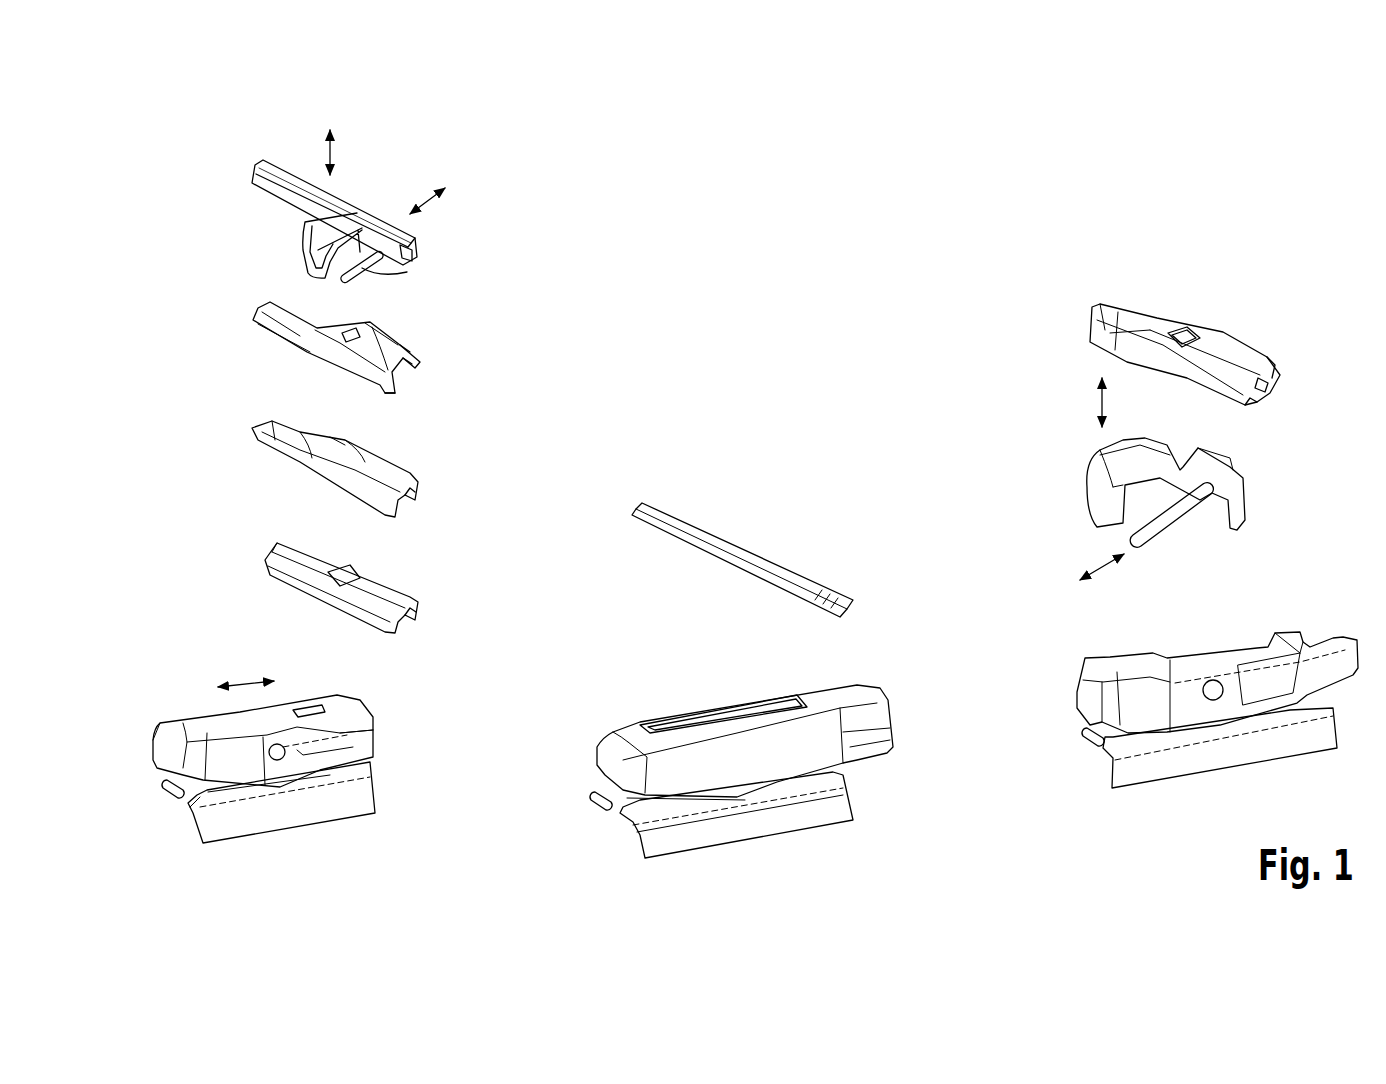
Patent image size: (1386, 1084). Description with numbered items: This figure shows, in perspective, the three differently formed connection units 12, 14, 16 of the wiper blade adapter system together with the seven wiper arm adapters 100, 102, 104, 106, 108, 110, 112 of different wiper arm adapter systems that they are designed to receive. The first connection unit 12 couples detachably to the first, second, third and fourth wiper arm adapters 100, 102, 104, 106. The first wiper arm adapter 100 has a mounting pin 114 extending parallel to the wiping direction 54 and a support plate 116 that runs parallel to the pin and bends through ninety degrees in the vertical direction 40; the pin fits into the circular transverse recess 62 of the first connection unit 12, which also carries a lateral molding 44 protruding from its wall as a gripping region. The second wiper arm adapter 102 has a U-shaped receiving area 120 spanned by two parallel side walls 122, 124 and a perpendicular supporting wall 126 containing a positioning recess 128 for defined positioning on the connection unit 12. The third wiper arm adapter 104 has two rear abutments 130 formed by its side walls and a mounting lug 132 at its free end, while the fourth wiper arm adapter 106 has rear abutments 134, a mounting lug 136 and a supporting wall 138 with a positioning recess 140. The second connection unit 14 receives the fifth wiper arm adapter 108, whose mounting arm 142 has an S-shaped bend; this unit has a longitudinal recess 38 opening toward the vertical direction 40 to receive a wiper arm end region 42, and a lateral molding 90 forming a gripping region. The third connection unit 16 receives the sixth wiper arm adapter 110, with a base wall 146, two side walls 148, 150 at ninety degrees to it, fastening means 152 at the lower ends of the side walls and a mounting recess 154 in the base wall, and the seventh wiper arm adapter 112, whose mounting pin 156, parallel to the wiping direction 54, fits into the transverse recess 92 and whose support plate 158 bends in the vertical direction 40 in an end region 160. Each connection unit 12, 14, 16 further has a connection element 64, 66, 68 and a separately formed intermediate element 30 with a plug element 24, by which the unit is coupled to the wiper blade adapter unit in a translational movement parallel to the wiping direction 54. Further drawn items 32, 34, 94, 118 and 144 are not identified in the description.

The first connection unit 12 is at (296, 761).
The second connection unit 14 is at (758, 769).
The third connection unit 16 is at (1225, 680).
The plug element 24 is at (173, 793).
The intermediate element 30 is at (273, 810).
The base element 32 is at (720, 835).
The base element 34 is at (1183, 765).
The longitudinal recess 38 is at (740, 707).
The vertical direction 40 is at (335, 152).
The wiper arm end region 42 is at (867, 613).
The lateral molding 44 is at (363, 747).
The wiping direction 54 is at (435, 205).
The transverse recess 62 is at (283, 757).
The connection element 64 is at (285, 720).
The connection element 66 is at (815, 702).
The connection element 68 is at (1222, 660).
The lateral molding 90 is at (882, 752).
The transverse recess 92 is at (1218, 690).
The transverse direction 94 is at (250, 683).
The first wiper arm adapter 100 is at (362, 209).
The second wiper arm adapter 102 is at (386, 355).
The third wiper arm adapter 104 is at (379, 469).
The fourth wiper arm adapter 106 is at (358, 573).
The fifth wiper arm adapter 108 is at (783, 560).
The sixth wiper arm adapter 110 is at (1228, 353).
The seventh wiper arm adapter 112 is at (1163, 503).
The mounting pin 114 is at (393, 283).
The support plate 116 is at (320, 238).
The receiving region 118 is at (292, 262).
The U-shaped receiving area 120 is at (433, 388).
The side wall 122 is at (413, 360).
The side wall 124 is at (395, 392).
The supporting wall 126 is at (387, 352).
The positioning recess 128 is at (360, 335).
The rear abutments 130 is at (337, 485).
The mounting lug 132 is at (403, 493).
The rear abutments 134 is at (335, 608).
The mounting lug 136 is at (410, 608).
The supporting wall 138 is at (282, 557).
The positioning recess 140 is at (355, 567).
The mounting arm 142 is at (807, 582).
The insertion direction 144 is at (790, 608).
The base wall 146 is at (1240, 360).
The side wall 148 is at (1280, 368).
The side wall 150 is at (1250, 407).
The fastening means 152 is at (1277, 383).
The mounting recess 154 is at (1193, 340).
The mounting pin 156 is at (1173, 520).
The support plate 158 is at (1127, 460).
The end region 160 is at (1063, 490).